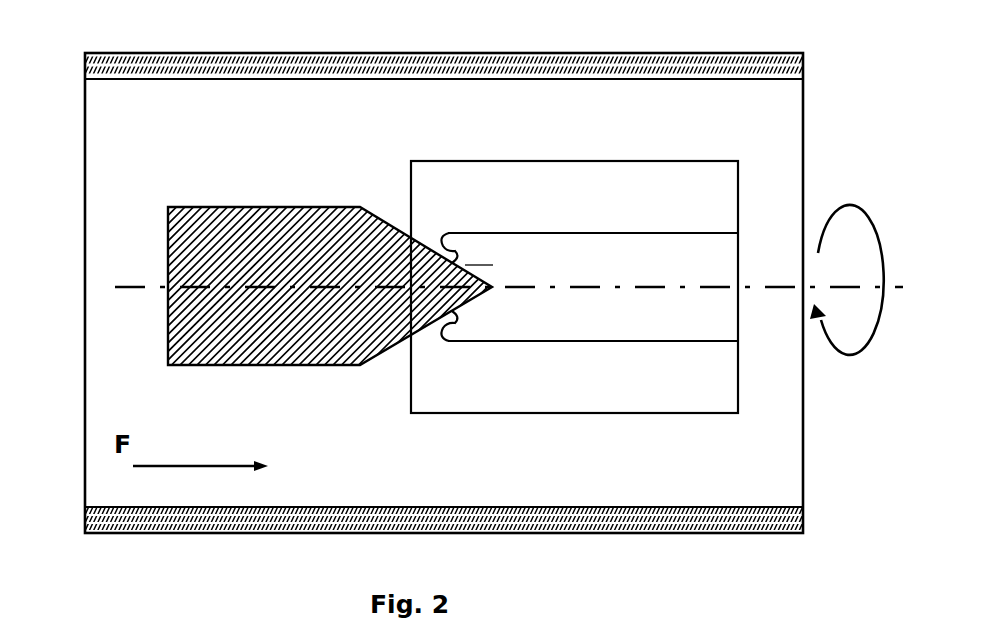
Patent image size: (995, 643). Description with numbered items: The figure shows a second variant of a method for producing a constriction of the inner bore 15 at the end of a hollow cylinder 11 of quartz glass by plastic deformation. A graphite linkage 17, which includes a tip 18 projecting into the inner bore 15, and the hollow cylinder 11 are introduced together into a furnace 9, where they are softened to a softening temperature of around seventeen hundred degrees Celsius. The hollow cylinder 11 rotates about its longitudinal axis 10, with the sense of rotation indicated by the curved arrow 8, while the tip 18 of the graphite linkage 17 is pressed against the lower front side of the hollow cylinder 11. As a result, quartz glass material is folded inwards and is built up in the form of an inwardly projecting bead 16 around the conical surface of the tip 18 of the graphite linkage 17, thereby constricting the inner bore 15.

The direction of rotation 8 is at (840, 213).
The furnace 9 is at (637, 512).
The longitudinal axis 10 is at (758, 290).
The hollow cylinder 11 is at (607, 189).
The inner bore 15 is at (668, 268).
The bead 16 is at (450, 337).
The graphite linkage 17 is at (248, 255).
The tip 18 is at (427, 247).